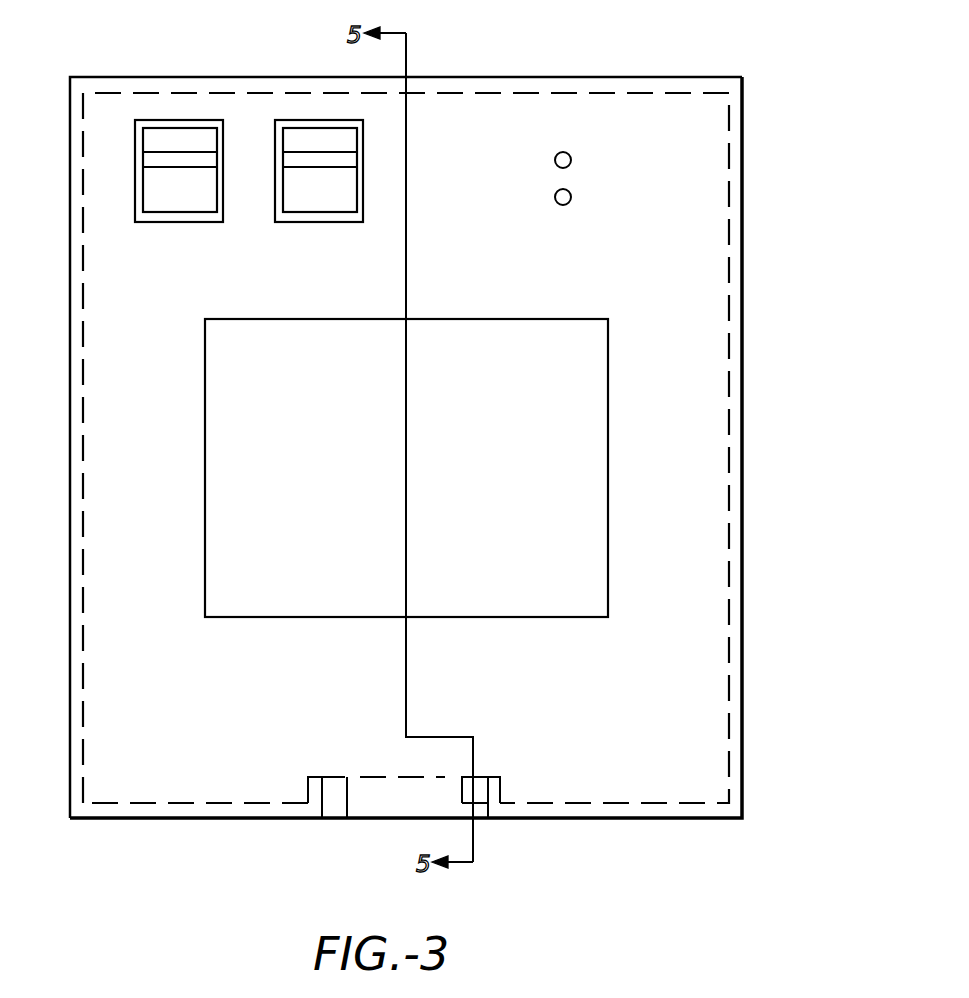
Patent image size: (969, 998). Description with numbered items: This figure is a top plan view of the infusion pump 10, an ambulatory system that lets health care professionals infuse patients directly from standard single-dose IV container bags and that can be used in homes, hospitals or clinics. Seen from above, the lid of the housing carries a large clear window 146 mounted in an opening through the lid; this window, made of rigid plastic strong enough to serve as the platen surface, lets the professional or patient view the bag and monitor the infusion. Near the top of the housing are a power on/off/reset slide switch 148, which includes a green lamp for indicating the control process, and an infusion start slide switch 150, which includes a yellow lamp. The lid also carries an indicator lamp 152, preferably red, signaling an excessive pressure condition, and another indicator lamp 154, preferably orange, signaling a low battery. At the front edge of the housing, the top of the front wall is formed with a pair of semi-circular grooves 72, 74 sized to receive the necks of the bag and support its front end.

The infusion pump 10 is at (773, 188).
The semi-circular groove 72 is at (340, 783).
The semi-circular groove 74 is at (462, 787).
The clear window 146 is at (494, 348).
The power on/off/reset slide switch 148 is at (170, 135).
The infusion start slide switch 150 is at (312, 138).
The indicator lamp 152 is at (571, 199).
The indicator lamp 154 is at (569, 156).